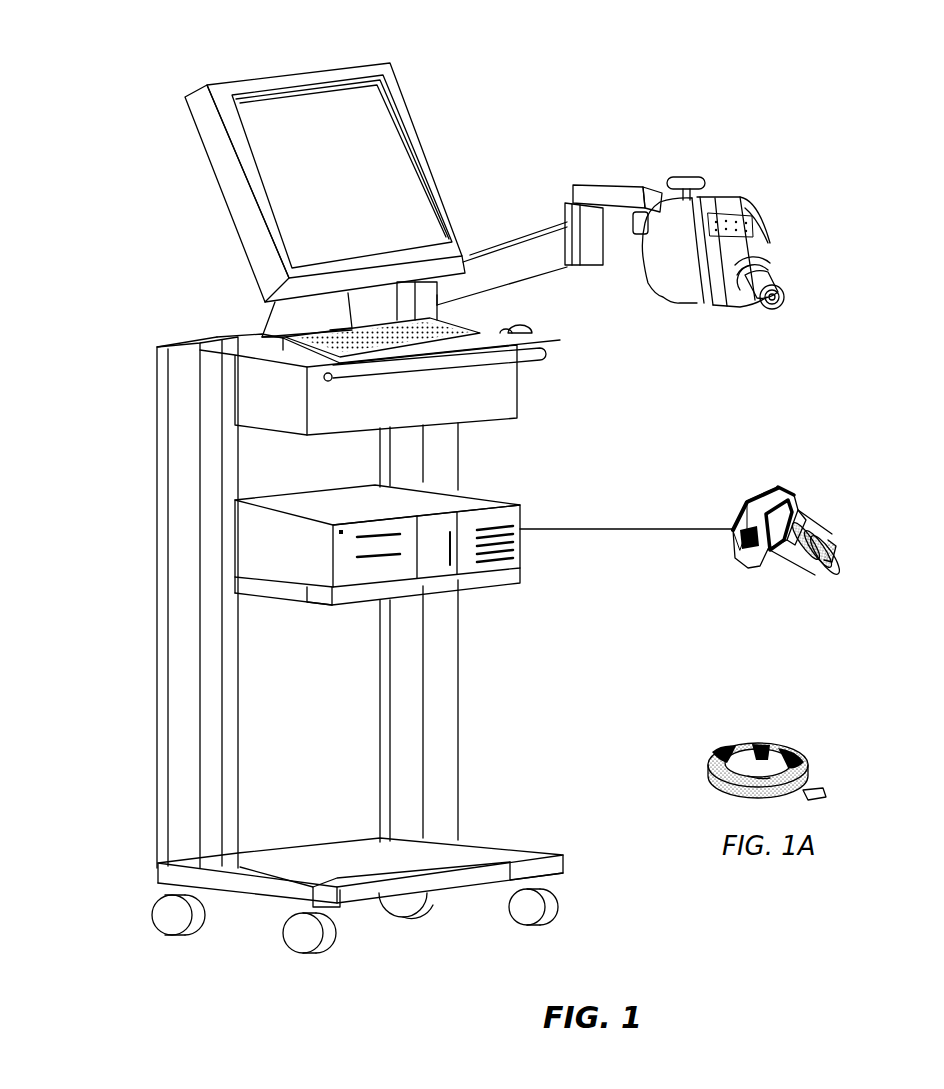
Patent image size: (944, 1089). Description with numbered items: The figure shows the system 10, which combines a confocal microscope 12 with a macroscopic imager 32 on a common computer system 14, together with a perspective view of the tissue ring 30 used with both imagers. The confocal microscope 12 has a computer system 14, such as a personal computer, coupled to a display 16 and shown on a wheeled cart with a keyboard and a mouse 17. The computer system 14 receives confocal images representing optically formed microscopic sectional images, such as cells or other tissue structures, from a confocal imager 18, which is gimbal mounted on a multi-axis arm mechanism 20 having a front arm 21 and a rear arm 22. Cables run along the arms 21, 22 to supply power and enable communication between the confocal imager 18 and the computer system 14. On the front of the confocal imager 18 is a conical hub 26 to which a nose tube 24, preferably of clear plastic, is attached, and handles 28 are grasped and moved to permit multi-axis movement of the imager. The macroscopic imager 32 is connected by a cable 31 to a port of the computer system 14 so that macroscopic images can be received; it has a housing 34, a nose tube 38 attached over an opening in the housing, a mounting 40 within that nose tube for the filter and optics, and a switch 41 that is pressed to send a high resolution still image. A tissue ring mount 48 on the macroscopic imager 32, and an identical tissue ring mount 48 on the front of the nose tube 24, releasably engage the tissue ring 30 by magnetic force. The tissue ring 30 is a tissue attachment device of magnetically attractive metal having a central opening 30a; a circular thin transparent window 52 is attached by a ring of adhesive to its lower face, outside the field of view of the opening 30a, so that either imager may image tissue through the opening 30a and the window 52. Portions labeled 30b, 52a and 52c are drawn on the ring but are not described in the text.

In FIG. 1, the system 10 is at (443, 29).
In FIG. 1, the confocal microscope 12 is at (512, 284).
In FIG. 1, the computer system 14 is at (415, 534).
In FIG. 1, the display 16 is at (198, 132).
In FIG. 1, the mouse 17 is at (533, 330).
In FIG. 1, the confocal imager 18 is at (658, 284).
In FIG. 1, the multi-axis arm mechanism 20 is at (573, 203).
In FIG. 1, the front arm 21 is at (617, 177).
In FIG. 1, the rear arm 22 is at (502, 229).
In FIG. 1, the nose tube 24 is at (735, 321).
In FIG. 1, the conical hub 26 is at (780, 240).
In FIG. 1, the handles 28 is at (725, 153).
In FIG. 1, the tissue ring 30 is at (830, 543).
In FIG. 1A, the tissue ring 30 is at (747, 743).
In FIG. 1A, the central opening 30a is at (767, 770).
In FIG. 1A, the contact portion 30b is at (718, 753).
In FIG. 1, the cable 31 is at (655, 527).
In FIG. 1, the macroscopic imager 32 is at (773, 488).
In FIG. 1, the housing 34 is at (750, 570).
In FIG. 1, the nose tube 38 is at (803, 513).
In FIG. 1, the mounting 40 is at (793, 495).
In FIG. 1, the switch 41 is at (730, 552).
In FIG. 1, the tissue ring mount 48 is at (782, 291).
In FIG. 1, the window 52 is at (812, 570).
In FIG. 1A, the window 52 is at (762, 785).
In FIG. 1, the ring tab 52a is at (828, 560).
In FIG. 1A, the ring tab 52a is at (812, 793).
In FIG. 1A, the ring inner edge 52c is at (770, 778).